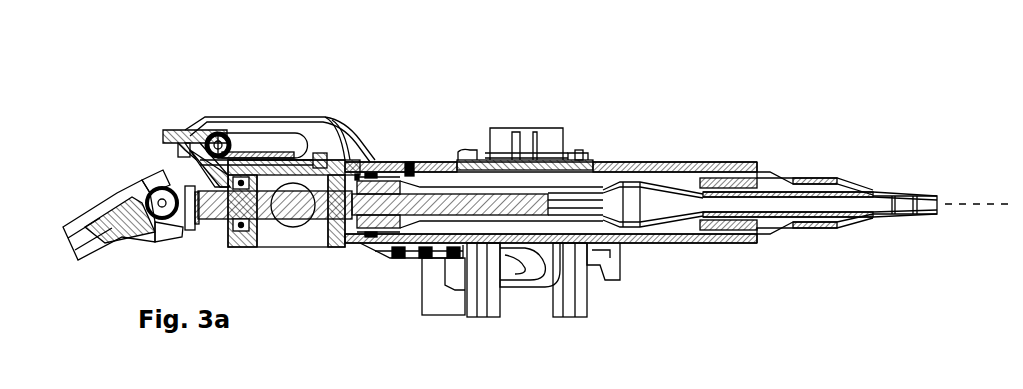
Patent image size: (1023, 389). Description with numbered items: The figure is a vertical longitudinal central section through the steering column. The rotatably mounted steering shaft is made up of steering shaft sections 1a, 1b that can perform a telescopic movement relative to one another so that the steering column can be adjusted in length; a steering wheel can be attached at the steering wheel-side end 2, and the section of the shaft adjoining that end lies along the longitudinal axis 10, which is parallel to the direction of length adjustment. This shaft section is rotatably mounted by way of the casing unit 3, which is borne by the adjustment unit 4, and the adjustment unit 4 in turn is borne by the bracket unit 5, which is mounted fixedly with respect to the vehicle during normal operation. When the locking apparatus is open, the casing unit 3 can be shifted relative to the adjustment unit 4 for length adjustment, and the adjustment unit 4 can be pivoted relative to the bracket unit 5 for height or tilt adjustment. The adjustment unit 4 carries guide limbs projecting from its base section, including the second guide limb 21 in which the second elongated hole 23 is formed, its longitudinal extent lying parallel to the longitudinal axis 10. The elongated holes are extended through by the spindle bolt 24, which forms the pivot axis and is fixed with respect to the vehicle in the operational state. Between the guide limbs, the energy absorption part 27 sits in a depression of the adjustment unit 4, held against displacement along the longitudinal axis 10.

The steering shaft section 1a is at (855, 216).
The steering shaft section 1b is at (337, 208).
The steering wheel-side end 2 is at (938, 193).
The casing unit 3 is at (734, 165).
The adjustment unit 4 is at (374, 157).
The bracket unit 5 is at (570, 132).
The longitudinal axis 10 is at (973, 206).
The second guide limb 21 is at (303, 122).
The second elongated hole 23 is at (257, 140).
The spindle bolt 24 is at (220, 140).
The energy absorption part 27 is at (276, 154).